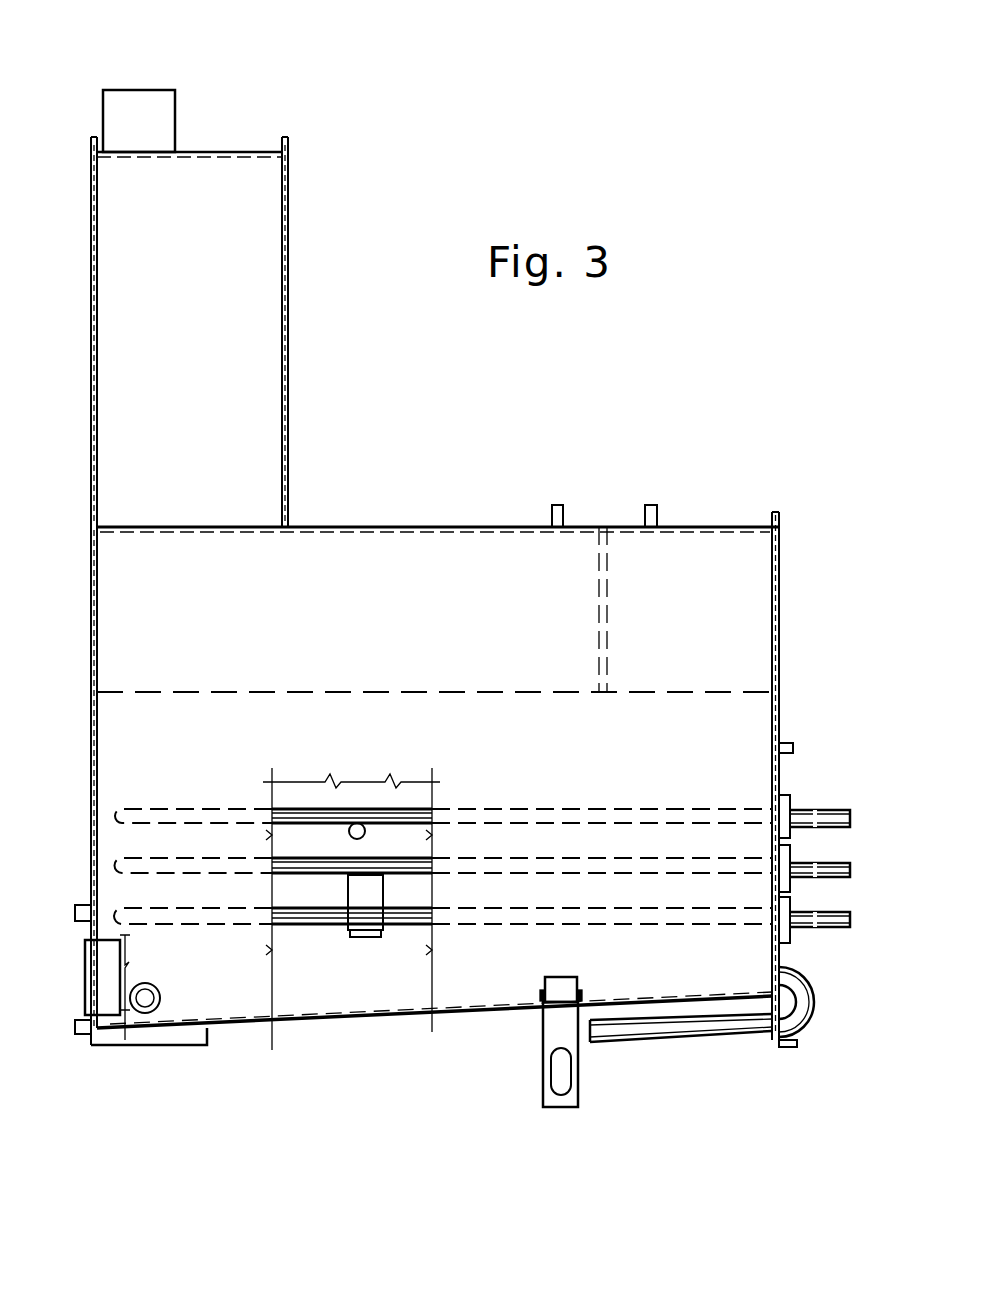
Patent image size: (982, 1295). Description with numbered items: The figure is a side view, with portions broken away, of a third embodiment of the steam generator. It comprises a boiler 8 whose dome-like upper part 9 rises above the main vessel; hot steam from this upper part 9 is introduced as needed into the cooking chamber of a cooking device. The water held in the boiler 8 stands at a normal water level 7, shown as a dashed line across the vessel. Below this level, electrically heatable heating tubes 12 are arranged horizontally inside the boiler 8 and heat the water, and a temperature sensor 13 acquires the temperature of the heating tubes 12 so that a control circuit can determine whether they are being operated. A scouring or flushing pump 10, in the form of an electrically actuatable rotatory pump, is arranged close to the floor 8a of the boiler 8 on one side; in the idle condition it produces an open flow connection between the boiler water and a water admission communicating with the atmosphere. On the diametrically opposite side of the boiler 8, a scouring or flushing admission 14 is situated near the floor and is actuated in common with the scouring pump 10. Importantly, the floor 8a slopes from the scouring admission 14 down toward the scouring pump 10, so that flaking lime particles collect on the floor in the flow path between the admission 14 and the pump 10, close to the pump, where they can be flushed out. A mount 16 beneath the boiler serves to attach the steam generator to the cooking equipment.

The normal water level 7 is at (145, 692).
The boiler 8 is at (758, 710).
The floor 8a is at (343, 1020).
The dome-like upper part 9 is at (262, 283).
The scouring pump 10 is at (93, 1052).
The heating tubes 12 is at (783, 798).
The temperature sensor 13 is at (357, 826).
The scouring admission 14 is at (808, 1005).
The mount 16 is at (545, 1100).